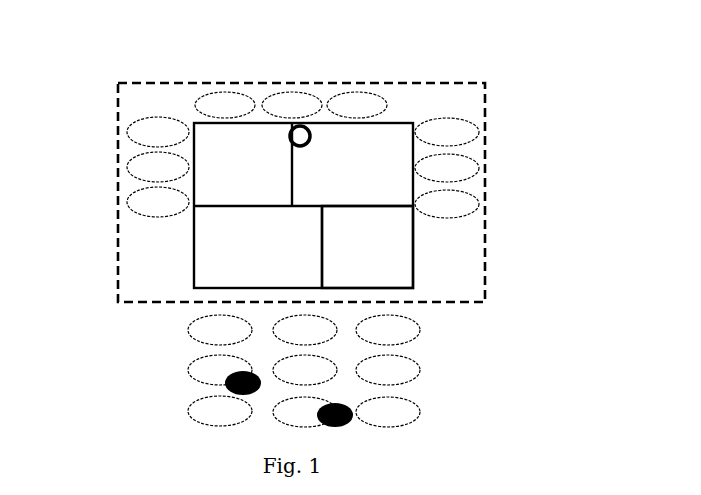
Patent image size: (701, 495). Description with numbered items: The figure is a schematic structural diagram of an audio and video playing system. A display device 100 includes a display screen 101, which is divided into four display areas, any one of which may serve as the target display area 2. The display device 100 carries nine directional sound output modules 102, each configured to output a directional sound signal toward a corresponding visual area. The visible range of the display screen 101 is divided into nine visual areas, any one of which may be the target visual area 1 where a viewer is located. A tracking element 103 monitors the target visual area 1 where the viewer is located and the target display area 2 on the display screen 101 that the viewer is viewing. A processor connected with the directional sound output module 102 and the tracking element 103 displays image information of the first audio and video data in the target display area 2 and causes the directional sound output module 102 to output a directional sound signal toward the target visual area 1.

The display device 100 is at (165, 72).
The display screen 101 is at (406, 120).
The directional sound output module 102 is at (128, 158).
The tracking element 103 is at (346, 84).
The target display area 2 is at (392, 253).
The target visual area 1 is at (186, 362).